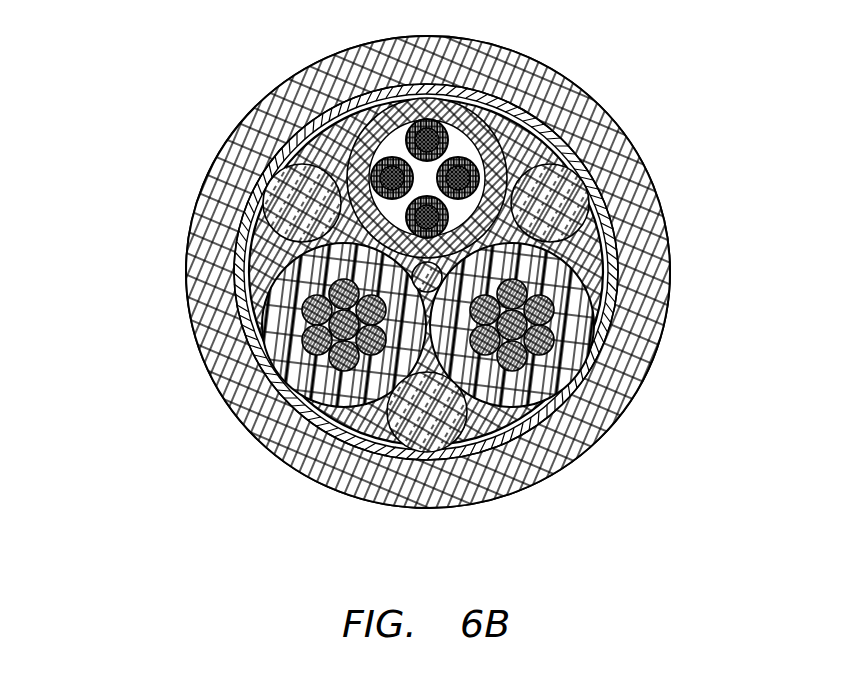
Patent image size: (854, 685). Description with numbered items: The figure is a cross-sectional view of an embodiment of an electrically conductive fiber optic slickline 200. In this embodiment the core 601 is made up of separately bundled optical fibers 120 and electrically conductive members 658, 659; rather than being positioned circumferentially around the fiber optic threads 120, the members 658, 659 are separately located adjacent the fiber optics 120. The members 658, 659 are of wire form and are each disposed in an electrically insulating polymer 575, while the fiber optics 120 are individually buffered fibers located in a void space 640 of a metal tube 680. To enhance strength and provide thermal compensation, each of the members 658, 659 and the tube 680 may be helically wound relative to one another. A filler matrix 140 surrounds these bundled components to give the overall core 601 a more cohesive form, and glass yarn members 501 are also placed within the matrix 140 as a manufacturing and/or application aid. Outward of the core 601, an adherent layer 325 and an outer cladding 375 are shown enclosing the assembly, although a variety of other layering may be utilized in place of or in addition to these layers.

The electrically conductive fiber optic slickline 200 is at (123, 53).
The optical fibers 120 is at (490, 172).
The filler matrix 140 is at (355, 427).
The adherent layer 325 is at (280, 158).
The outer cladding 375 is at (207, 202).
The glass yarn members 501 is at (462, 440).
The electrically insulating polymer 575 is at (277, 297).
The core 601 is at (548, 128).
The void space 640 is at (490, 68).
The electrically conductive member 658 is at (540, 372).
The electrically conductive member 659 is at (288, 345).
The metal tube 680 is at (310, 100).